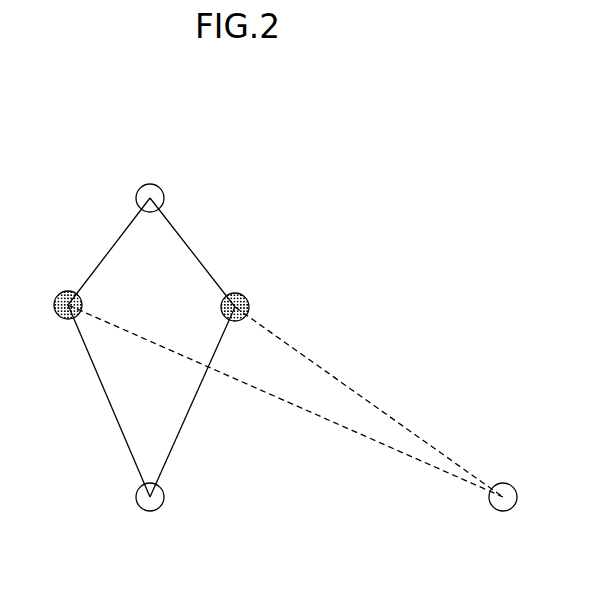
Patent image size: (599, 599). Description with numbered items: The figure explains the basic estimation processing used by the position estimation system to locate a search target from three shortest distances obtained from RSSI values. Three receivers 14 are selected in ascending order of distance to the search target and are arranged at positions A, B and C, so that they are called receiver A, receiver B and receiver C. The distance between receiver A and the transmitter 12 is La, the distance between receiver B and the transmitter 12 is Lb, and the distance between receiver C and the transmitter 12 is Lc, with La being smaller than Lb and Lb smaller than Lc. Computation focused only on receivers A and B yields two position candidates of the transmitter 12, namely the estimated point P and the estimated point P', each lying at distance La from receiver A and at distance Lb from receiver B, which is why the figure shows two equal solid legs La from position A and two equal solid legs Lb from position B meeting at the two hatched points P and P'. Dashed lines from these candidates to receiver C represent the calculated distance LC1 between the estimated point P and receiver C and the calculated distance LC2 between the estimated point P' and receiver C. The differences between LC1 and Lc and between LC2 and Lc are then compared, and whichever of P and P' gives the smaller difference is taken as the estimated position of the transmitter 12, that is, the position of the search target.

The transmitter 12 is at (165, 319).
The receivers 14 is at (312, 343).
The position A is at (163, 188).
The position B is at (163, 498).
The position C is at (509, 478).
The estimated point P is at (60, 294).
The estimated point P' is at (246, 292).
The distance La is at (151, 252).
The distance Lb is at (151, 401).
The distance Lc1 LC1 is at (285, 401).
The distance Lc2 LC2 is at (369, 402).